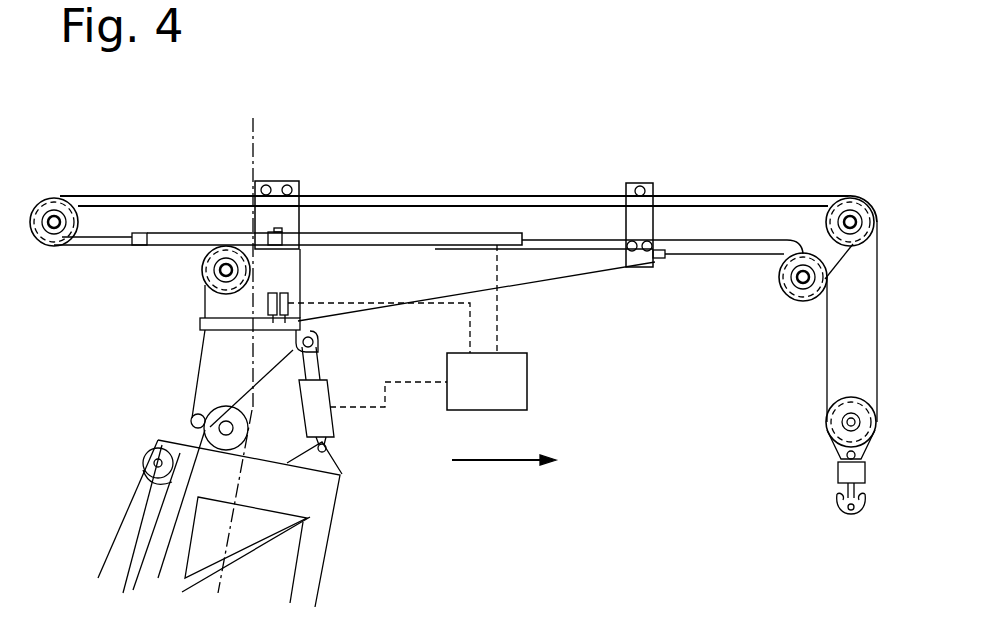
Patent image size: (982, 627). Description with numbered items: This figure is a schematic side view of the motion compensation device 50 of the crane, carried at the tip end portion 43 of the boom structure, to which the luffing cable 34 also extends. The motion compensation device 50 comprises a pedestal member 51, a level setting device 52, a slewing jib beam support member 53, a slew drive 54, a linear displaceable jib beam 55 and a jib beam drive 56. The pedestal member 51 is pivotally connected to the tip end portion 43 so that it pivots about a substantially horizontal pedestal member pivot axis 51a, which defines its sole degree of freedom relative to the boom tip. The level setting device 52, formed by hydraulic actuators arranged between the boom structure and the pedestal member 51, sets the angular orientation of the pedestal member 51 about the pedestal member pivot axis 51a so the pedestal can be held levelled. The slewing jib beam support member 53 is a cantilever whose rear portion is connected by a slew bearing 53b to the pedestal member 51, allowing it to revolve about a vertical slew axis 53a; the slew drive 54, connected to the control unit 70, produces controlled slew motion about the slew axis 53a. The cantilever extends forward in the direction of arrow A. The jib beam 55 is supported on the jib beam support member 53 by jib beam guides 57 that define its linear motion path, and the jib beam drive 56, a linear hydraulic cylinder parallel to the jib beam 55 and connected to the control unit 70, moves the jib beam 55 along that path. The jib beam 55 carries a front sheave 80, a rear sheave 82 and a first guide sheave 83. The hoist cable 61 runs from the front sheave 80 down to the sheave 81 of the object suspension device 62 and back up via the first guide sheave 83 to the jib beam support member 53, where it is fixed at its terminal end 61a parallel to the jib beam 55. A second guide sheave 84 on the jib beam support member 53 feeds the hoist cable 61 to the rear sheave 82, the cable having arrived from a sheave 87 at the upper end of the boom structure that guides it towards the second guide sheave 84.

The motion compensation device 50 is at (511, 152).
The pedestal member 51 is at (232, 358).
The pedestal member pivot axis 51a is at (192, 421).
The level setting device 52 is at (329, 422).
The slewing jib beam support member 53 is at (579, 274).
The slew axis 53a is at (253, 148).
The slew bearing 53b is at (197, 322).
The slew drive 54 is at (282, 296).
The linear displaceable jib beam 55 is at (720, 206).
The jib beam drive 56 is at (410, 233).
The jib beam guides 57 is at (278, 186).
The hoist cable 61 is at (829, 361).
The terminal end 61a is at (698, 260).
The object suspension device 62 is at (842, 506).
The control unit 70 is at (508, 379).
The front sheave 80 is at (856, 201).
The sheave of the object suspension device 81 is at (836, 425).
The rear sheave 82 is at (57, 199).
The first guide sheave 83 is at (787, 297).
The second guide sheave 84 is at (212, 271).
The sheave at upper end of boom structure 87 is at (247, 433).
The luffing cable 34 is at (148, 542).
The tip end portion 43 is at (313, 553).